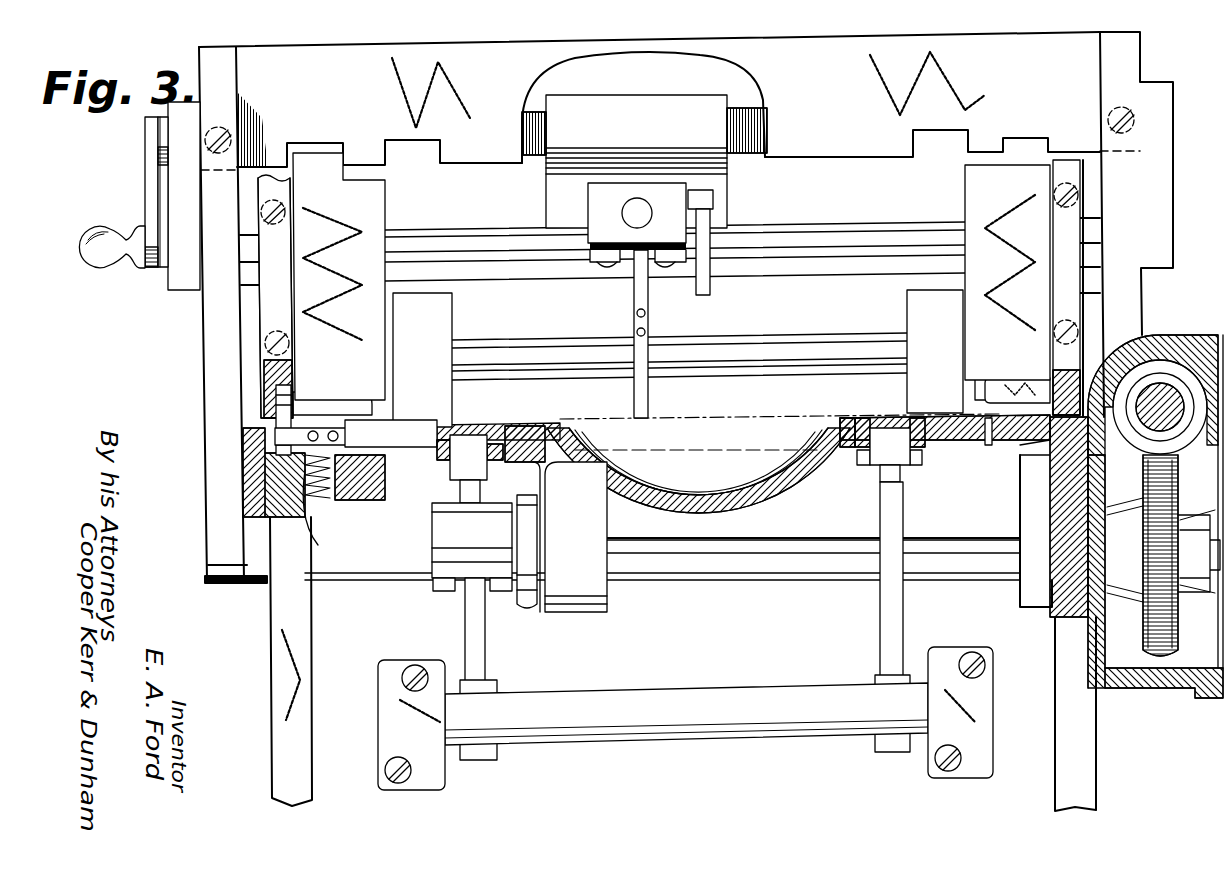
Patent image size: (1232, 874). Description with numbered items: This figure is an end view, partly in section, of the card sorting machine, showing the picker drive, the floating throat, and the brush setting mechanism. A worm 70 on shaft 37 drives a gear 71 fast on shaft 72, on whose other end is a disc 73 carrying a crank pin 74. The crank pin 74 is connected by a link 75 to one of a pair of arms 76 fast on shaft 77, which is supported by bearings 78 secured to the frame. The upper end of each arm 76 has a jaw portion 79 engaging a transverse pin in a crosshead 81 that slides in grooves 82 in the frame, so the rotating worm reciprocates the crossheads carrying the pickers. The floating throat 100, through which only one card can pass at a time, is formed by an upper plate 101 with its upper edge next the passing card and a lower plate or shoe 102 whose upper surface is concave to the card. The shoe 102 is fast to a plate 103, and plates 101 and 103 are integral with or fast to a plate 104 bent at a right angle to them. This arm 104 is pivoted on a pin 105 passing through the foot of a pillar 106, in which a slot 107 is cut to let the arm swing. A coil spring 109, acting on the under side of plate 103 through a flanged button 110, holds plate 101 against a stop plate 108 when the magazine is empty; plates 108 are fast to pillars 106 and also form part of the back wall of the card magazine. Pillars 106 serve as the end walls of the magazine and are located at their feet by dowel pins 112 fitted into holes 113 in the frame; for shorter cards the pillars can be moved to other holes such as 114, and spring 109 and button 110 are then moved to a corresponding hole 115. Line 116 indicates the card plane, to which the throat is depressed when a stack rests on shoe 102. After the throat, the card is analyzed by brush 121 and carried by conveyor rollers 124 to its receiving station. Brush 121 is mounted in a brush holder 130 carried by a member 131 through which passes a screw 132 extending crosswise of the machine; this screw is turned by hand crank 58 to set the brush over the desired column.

The shaft 37 is at (1158, 392).
The hand crank 58 is at (152, 174).
The worm 70 is at (1180, 430).
The gear 71 is at (1178, 494).
The shaft 72 is at (752, 568).
The disc 73 is at (542, 612).
The crank pin 74 is at (524, 608).
The link 75 is at (450, 540).
The arms 76 is at (470, 618).
The shaft 77 is at (684, 694).
The bearings 78 is at (380, 706).
The jaw portion 79 is at (466, 458).
The crosshead 81 is at (476, 430).
The grooves 82 is at (520, 432).
The floating throat 100 is at (972, 395).
The upper plate 101 is at (352, 392).
The shoe 102 is at (362, 500).
The plate 103 is at (328, 500).
The plate 104 is at (272, 438).
The pin 105 is at (270, 410).
The pillar 106 is at (268, 320).
The slot 107 is at (294, 385).
The stop plate 108 is at (372, 222).
The coil spring 109 is at (316, 520).
The flanged button 110 is at (268, 470).
The dowel pins 112 is at (1042, 450).
The holes 113 is at (1060, 458).
The hole 114 is at (990, 446).
The hole 115 is at (395, 470).
The card plane 116 is at (705, 418).
The analyzing brush 121 is at (660, 418).
The conveyor rollers 124 is at (440, 332).
The brush holder 130 is at (652, 325).
The brush holder structure 131 is at (695, 108).
The screw 132 is at (746, 160).